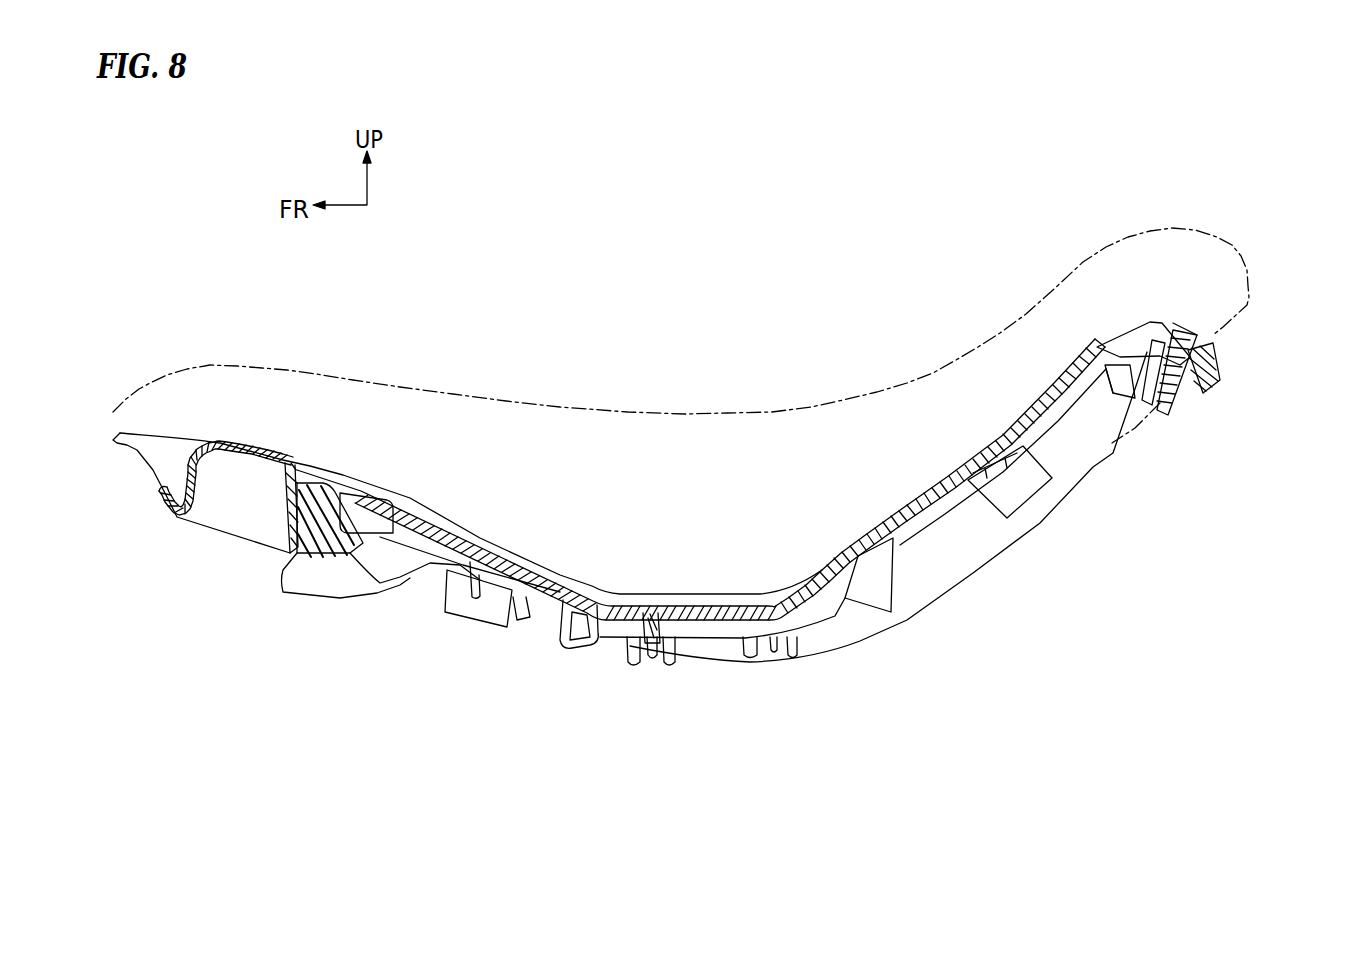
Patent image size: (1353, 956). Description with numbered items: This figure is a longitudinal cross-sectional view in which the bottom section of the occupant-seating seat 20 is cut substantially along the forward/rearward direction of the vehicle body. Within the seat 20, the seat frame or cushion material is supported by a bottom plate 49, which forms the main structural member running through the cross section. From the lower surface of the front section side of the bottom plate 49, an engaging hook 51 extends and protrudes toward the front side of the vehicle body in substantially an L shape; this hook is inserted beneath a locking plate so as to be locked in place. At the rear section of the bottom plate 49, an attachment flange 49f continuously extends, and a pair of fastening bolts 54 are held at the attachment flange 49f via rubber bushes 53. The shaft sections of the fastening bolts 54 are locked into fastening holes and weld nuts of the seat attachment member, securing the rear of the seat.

The seat 20 is at (880, 374).
The bottom plate 49 is at (908, 510).
The attachment flange 49f is at (1135, 347).
The engaging hook 51 is at (325, 590).
The rubber bush 53 is at (1210, 367).
The fastening bolt 54 is at (1190, 327).